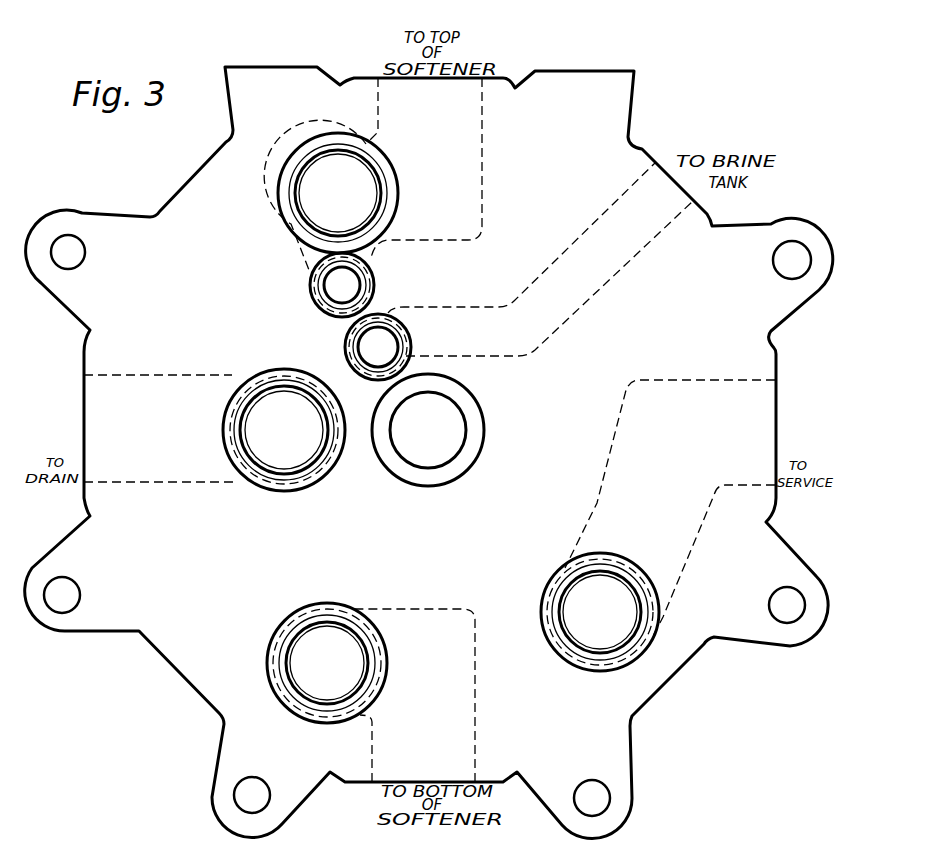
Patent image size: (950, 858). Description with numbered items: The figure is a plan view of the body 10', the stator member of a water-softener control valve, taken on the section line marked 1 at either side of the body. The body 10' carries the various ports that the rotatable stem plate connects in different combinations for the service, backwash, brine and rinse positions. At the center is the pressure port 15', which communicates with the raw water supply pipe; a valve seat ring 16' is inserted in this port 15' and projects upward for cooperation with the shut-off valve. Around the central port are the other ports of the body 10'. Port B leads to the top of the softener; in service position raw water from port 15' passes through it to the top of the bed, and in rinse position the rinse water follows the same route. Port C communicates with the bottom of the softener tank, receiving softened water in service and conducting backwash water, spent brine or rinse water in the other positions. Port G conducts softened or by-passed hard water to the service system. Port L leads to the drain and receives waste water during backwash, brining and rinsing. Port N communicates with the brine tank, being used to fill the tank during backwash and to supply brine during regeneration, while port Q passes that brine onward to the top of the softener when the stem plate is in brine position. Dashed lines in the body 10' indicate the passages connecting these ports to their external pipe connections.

The body 10' is at (429, 453).
The port B is at (338, 193).
The port Q is at (330, 290).
The port N is at (367, 353).
The port L is at (284, 430).
The central pressure port 15' is at (428, 430).
The valve seat ring 16' is at (428, 447).
The port G is at (600, 612).
The port C is at (327, 663).
The section line 1 is at (65, 432).